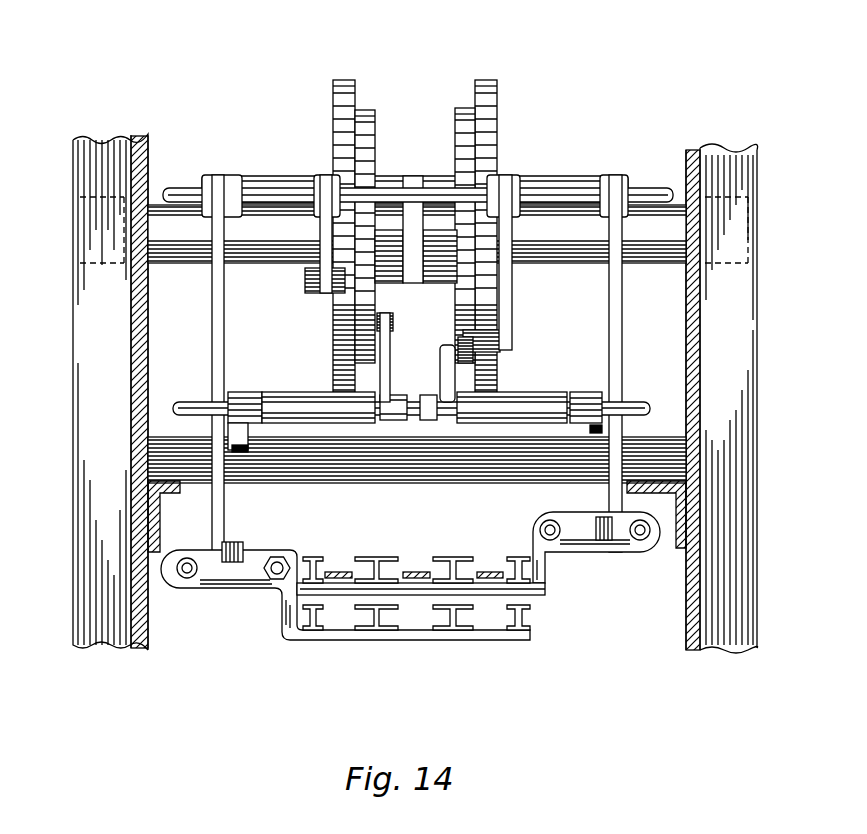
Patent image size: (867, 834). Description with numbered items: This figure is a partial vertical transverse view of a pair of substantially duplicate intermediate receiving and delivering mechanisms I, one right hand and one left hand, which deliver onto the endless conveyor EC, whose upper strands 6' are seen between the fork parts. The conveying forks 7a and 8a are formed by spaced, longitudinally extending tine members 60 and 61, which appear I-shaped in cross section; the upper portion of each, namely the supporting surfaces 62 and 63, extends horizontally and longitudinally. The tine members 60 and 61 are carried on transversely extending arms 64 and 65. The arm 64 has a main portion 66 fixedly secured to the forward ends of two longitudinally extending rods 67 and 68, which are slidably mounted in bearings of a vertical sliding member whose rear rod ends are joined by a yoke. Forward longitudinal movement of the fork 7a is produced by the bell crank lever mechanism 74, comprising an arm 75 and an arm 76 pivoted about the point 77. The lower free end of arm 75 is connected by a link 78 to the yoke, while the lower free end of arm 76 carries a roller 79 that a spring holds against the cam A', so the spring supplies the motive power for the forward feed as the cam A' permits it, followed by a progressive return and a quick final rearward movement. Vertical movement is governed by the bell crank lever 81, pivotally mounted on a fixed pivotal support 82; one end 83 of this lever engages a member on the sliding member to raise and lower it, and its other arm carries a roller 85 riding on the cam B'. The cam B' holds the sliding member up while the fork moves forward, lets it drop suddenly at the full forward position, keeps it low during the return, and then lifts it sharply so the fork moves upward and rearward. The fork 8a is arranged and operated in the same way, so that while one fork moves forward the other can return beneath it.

The bell crank lever mechanism 74 is at (240, 182).
The arm 75 is at (212, 333).
The arm 76 is at (322, 227).
The pivot point 77 is at (414, 188).
The roller 79 is at (323, 278).
The roller 85 is at (457, 343).
The lever end 83 is at (445, 372).
The bell crank lever 81 is at (313, 393).
The fixed pivotal support 82 is at (178, 408).
The link 78 is at (235, 543).
The transversely extending arm 65 is at (282, 635).
The main portion 66 is at (573, 547).
The longitudinally extending rod 67 is at (645, 540).
The longitudinally extending rod 68 is at (554, 540).
The transversely extending arm 64 is at (538, 594).
The supporting surface 63 is at (312, 557).
The supporting surface 62 is at (398, 557).
The tine member 61 is at (326, 571).
The tine member 60 is at (378, 545).
The conveying fork 7a is at (450, 555).
The upper strands of the conveyor 6' is at (492, 551).
The conveying fork 8a is at (445, 628).
The cam A' is at (430, 204).
The cam B' is at (415, 203).
The intermediate receiving and delivering mechanism I is at (622, 110).
The endless conveyor EC is at (293, 667).